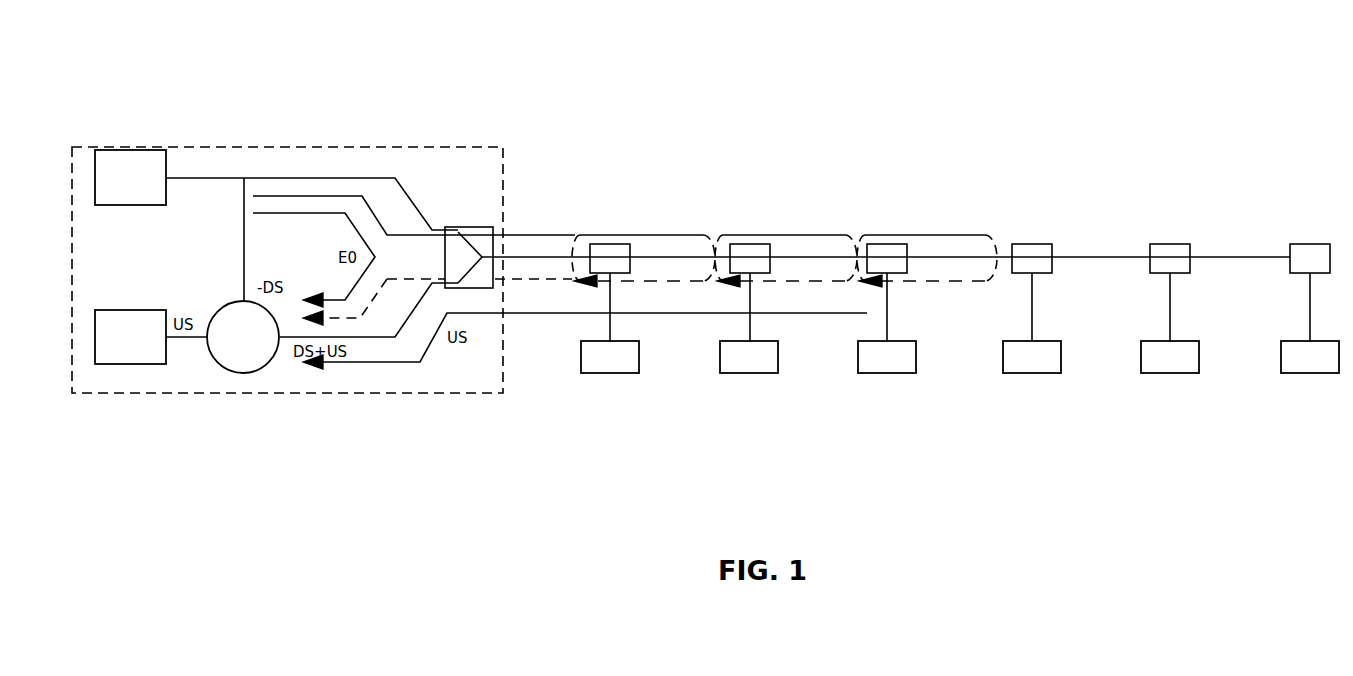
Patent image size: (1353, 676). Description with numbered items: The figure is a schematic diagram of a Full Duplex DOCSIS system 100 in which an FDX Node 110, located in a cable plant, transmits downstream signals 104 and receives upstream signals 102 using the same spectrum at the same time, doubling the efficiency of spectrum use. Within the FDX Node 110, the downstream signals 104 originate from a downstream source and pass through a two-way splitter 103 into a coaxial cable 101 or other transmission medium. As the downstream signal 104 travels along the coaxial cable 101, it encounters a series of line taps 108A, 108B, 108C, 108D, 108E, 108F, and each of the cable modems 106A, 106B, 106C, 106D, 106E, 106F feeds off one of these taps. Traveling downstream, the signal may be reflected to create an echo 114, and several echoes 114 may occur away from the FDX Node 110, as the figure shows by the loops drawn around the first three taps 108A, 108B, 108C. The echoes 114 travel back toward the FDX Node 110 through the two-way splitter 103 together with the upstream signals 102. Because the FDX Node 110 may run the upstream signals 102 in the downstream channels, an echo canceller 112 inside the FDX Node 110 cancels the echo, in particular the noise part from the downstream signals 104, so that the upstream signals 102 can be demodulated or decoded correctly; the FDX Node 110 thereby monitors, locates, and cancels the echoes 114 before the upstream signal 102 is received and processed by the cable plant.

The Full Duplex DOCSIS system 100 is at (632, 82).
The coaxial cable 101 is at (552, 260).
The upstream signals 102 is at (127, 310).
The two-way splitter 103 is at (449, 227).
The downstream signals 104 is at (112, 148).
The cable modem 106A is at (610, 373).
The cable modem 106B is at (750, 373).
The cable modem 106C is at (887, 373).
The cable modem 106D is at (1032, 373).
The cable modem 106E is at (1170, 373).
The cable modem 106F is at (1310, 373).
The line tap 108A is at (606, 244).
The line tap 108B is at (743, 244).
The line tap 108C is at (881, 244).
The line tap 108D is at (1020, 244).
The line tap 108E is at (1161, 244).
The line tap 108F is at (1308, 244).
The FDX Node 110 is at (259, 147).
The echo canceller 112 is at (226, 304).
The echoes 114 is at (528, 235).